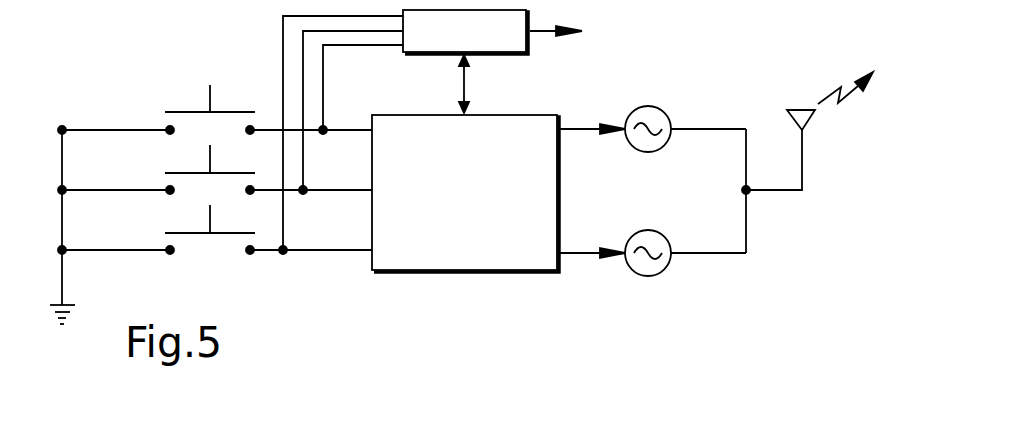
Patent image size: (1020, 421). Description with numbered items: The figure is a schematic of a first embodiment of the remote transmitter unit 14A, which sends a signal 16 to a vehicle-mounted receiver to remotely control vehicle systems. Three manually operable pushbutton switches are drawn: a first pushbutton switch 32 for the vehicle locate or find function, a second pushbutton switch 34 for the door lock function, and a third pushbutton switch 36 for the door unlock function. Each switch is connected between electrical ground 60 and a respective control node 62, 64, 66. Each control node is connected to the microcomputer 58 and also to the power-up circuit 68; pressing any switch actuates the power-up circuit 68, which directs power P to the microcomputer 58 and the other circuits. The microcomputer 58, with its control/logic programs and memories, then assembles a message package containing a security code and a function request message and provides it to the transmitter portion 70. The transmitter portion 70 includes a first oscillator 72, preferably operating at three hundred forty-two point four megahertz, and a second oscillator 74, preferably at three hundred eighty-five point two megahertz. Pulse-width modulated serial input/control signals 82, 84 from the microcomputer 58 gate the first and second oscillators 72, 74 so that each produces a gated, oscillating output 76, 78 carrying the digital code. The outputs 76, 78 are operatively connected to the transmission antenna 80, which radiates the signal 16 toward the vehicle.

The transmitter unit 14A is at (187, 47).
The first pushbutton switch 32 is at (180, 111).
The second pushbutton switch 34 is at (180, 172).
The third pushbutton switch 36 is at (180, 232).
The electrical ground 60 is at (70, 303).
The control node 62 is at (323, 128).
The control node 64 is at (303, 189).
The control node 66 is at (283, 248).
The microcomputer 58 is at (442, 260).
The power-up circuit 68 is at (508, 54).
The input/control signal 82 is at (574, 128).
The input/control signal 84 is at (574, 252).
The first oscillator 72 is at (632, 150).
The second oscillator 74 is at (632, 274).
The output 76 is at (690, 128).
The output 78 is at (690, 252).
The signal 16 is at (832, 94).
The transmission antenna 80 is at (806, 120).
The transmitter portion 70 is at (787, 220).